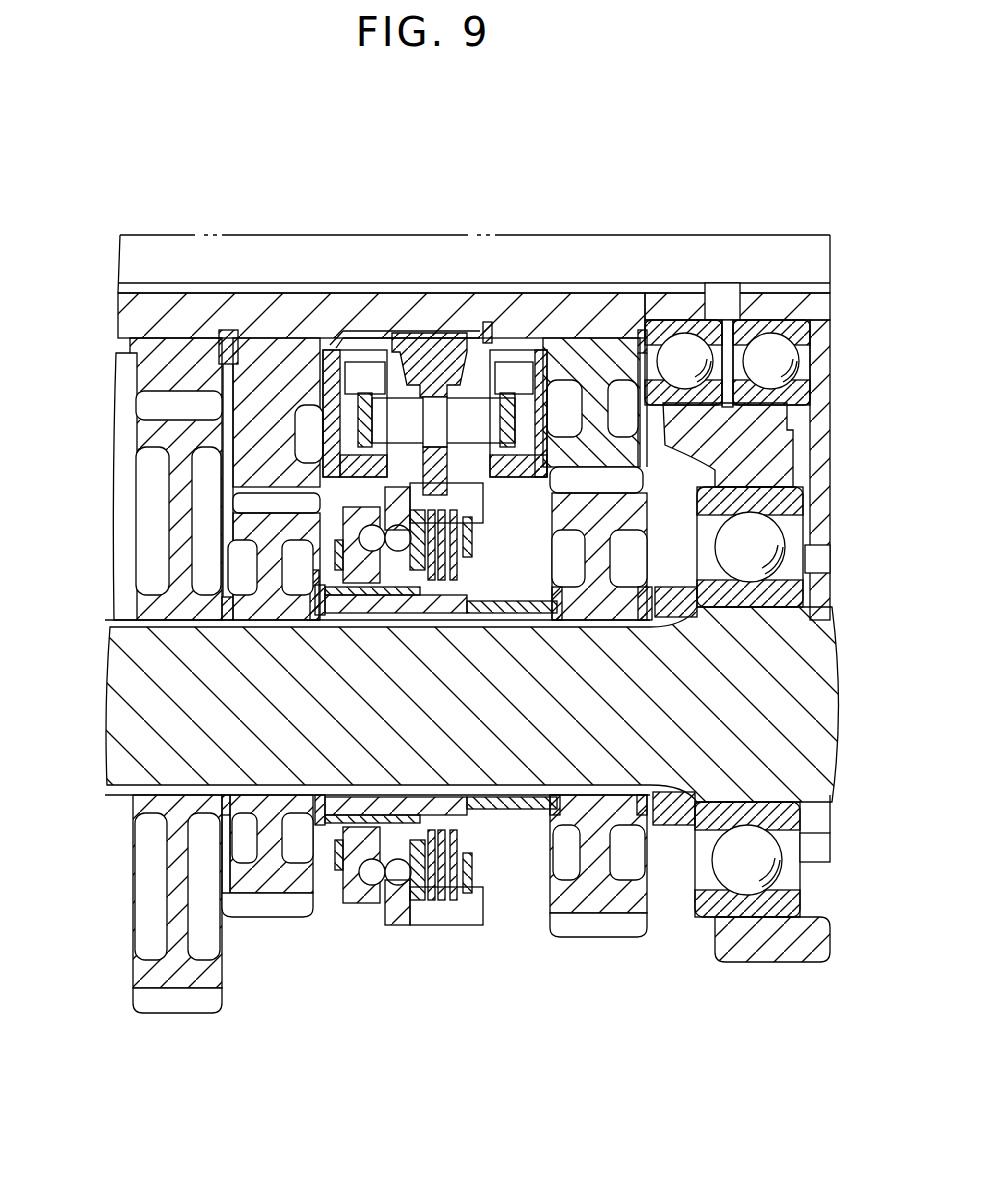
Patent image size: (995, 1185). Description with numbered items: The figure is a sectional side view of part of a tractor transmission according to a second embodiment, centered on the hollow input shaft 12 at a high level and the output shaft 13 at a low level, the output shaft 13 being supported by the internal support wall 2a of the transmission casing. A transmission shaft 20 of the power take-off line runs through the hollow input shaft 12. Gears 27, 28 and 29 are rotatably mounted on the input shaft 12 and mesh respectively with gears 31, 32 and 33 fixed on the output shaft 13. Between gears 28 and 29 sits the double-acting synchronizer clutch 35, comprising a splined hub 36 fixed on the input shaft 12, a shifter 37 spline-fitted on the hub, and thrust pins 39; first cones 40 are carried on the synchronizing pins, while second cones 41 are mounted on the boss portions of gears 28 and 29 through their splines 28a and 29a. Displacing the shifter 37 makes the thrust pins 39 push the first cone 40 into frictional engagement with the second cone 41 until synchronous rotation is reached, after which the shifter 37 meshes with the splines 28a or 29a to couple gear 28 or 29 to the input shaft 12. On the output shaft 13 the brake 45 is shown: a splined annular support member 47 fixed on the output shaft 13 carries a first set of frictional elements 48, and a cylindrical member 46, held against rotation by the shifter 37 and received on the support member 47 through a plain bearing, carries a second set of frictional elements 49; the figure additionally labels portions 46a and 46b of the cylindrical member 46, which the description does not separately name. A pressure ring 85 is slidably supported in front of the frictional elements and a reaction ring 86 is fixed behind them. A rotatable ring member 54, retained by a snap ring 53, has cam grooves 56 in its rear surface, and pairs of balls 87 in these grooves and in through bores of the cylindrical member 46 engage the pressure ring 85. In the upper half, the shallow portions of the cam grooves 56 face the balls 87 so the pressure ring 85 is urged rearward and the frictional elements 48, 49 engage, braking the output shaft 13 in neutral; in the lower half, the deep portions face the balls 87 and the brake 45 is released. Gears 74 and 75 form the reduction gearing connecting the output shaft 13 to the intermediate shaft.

The internal support wall 2a is at (727, 950).
The hollow input shaft 12 is at (140, 322).
The output shaft 13 is at (140, 698).
The transmission shaft 20 is at (520, 243).
The gear 27 is at (145, 376).
The gear 28 is at (258, 352).
The splines 28a is at (357, 365).
The gear 29 is at (663, 335).
The splines 29a is at (552, 345).
The gear 31 is at (165, 1005).
The gear 32 is at (260, 905).
The gear 33 is at (618, 930).
The double-acting synchronizer clutch 35 is at (436, 595).
The splined hub 36 is at (432, 332).
The shifter 37 is at (482, 322).
The thrust pins 39 is at (400, 392).
The first cones 40 is at (302, 355).
The second cones 41 is at (335, 457).
The brake 45 is at (431, 892).
The cylindrical member 46 is at (398, 908).
The retainer portion 46a is at (531, 474).
The retainer portion 46b is at (483, 912).
The splined annular support member 47 is at (414, 600).
The first set of frictional elements 48 is at (452, 830).
The second set of frictional elements 49 is at (455, 903).
The snap ring 53 is at (334, 870).
The ring member 54 is at (357, 905).
The cam grooves 56 is at (366, 585).
The gear 74 is at (818, 848).
The gear 75 is at (818, 557).
The pressure ring 85 is at (408, 800).
The reaction ring 86 is at (474, 868).
The balls 87 is at (362, 812).